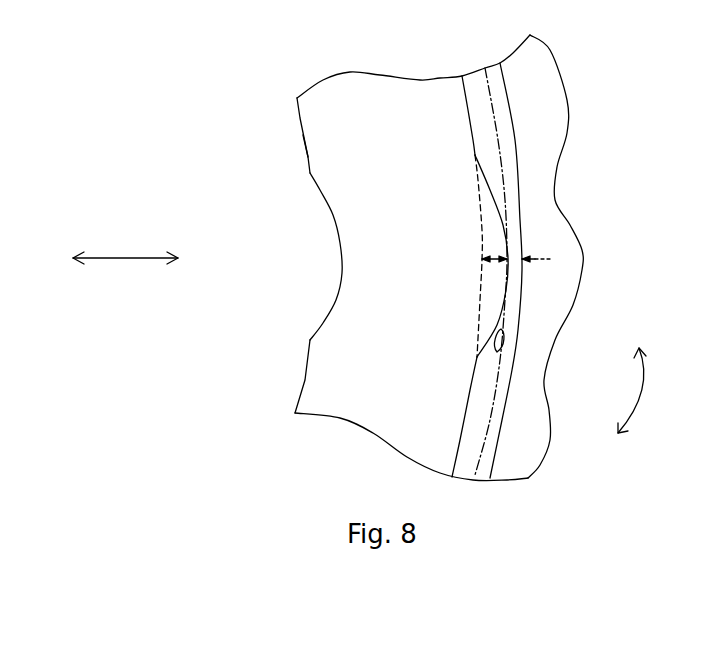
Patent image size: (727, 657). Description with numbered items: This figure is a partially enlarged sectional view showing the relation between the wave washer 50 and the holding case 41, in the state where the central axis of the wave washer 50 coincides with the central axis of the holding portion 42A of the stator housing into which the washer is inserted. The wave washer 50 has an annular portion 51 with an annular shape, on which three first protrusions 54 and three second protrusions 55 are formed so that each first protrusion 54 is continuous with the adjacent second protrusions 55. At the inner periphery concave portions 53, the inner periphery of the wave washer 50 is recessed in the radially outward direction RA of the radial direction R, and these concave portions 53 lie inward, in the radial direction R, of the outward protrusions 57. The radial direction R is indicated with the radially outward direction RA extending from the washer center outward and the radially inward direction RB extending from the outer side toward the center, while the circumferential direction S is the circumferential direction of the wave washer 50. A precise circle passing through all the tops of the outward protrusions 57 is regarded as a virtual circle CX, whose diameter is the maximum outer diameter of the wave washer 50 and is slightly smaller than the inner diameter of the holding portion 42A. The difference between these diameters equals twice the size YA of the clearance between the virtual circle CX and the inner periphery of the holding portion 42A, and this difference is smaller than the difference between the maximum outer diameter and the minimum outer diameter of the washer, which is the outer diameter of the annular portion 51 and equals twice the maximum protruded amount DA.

The wave washer 50 is at (380, 73).
The holding case 41 is at (504, 50).
The annular portion 51 is at (300, 117).
The first protrusion 54 is at (318, 153).
The inner periphery concave portion 53 is at (340, 242).
The outward protrusion 57 is at (497, 352).
The second protrusion 55 is at (315, 360).
The holding portion 42A is at (508, 198).
The virtual circle CX is at (503, 164).
The maximum protruded amount DA is at (493, 262).
The size of clearance YA is at (521, 254).
The circumferential direction S is at (638, 390).
The radial direction R is at (125, 245).
The radially outward direction RA is at (199, 260).
The radially inward direction RB is at (48, 260).